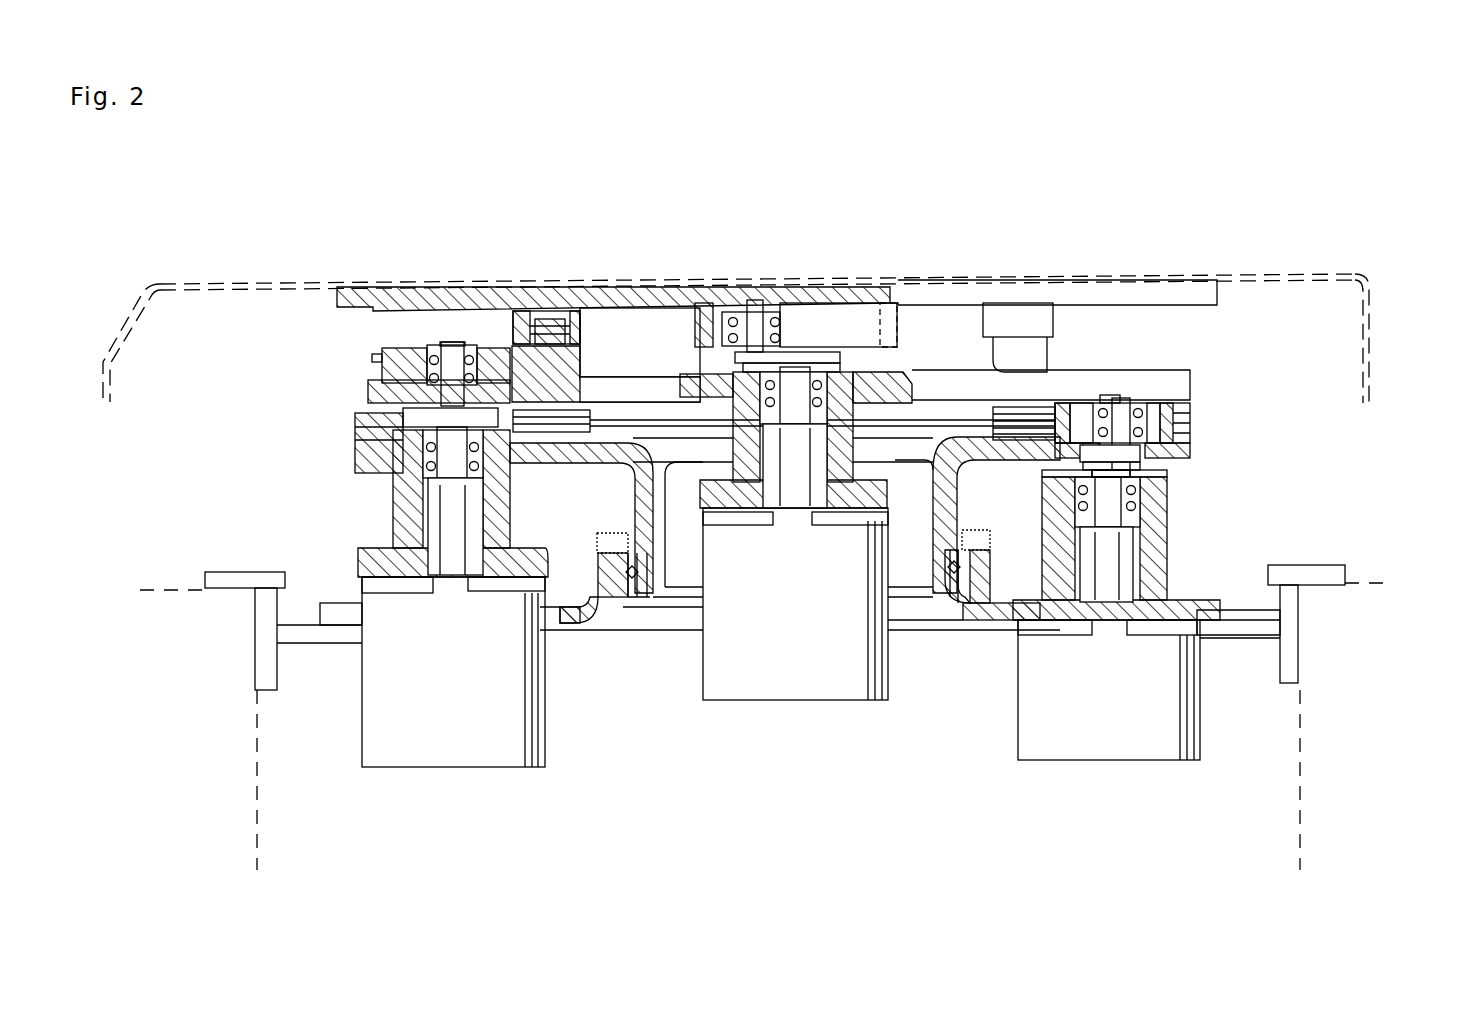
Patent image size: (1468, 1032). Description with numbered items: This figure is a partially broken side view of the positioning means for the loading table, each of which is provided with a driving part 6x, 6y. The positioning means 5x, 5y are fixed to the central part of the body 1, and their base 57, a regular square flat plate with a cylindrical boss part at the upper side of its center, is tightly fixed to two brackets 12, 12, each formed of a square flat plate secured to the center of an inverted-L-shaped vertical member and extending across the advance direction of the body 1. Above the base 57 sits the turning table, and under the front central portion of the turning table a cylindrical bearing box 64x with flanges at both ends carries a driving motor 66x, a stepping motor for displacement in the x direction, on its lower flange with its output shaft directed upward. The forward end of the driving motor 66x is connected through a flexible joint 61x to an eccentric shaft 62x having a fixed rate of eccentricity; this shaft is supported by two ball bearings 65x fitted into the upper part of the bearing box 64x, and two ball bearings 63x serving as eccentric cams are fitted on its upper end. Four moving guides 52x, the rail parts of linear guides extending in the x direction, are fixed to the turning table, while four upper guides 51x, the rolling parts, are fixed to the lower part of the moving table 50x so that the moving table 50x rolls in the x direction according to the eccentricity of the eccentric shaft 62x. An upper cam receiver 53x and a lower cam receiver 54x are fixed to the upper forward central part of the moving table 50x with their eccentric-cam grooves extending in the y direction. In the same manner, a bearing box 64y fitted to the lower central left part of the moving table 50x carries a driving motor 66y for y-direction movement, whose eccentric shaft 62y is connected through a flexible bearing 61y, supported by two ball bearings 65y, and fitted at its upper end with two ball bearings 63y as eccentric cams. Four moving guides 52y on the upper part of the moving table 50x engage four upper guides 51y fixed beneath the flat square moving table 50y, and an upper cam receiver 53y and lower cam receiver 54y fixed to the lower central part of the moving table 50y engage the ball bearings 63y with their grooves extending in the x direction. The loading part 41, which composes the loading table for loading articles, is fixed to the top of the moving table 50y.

The body 1 is at (172, 684).
The bracket 12 is at (292, 638).
The loading part 41 is at (1293, 272).
The positioning means 5x is at (1203, 381).
The positioning means 5y is at (1189, 268).
The moving table 50x is at (518, 348).
The moving table 50y is at (1052, 296).
The upper guide 51x is at (1090, 405).
The upper guide 51y is at (523, 311).
The moving guide 52x is at (1040, 417).
The moving guide 52y is at (562, 311).
The upper cam receiver 53x is at (430, 347).
The upper cam receiver 53y is at (893, 437).
The lower cam receiver 54x is at (375, 380).
The lower cam receiver 54y is at (893, 303).
The base 57 is at (1012, 617).
The X-axis drive unit 6x is at (426, 796).
The Y-axis drive unit 6y is at (774, 736).
The flexible joint 61x is at (437, 517).
The flexible bearing 61y is at (795, 480).
The eccentric shaft 62x is at (400, 418).
The eccentric shaft 62y is at (748, 305).
The ball bearing 63x is at (428, 345).
The ball bearing 63y is at (792, 305).
The bearing box 64x is at (378, 452).
The bearing box 64y is at (928, 522).
The ball bearing 65x is at (372, 456).
The ball bearing 65y is at (862, 388).
The driving motor 66x is at (485, 752).
The driving motor 66y is at (830, 687).